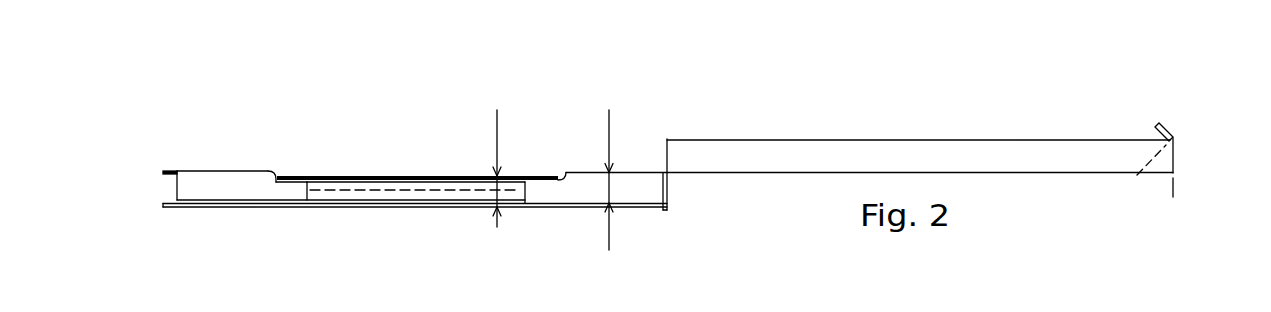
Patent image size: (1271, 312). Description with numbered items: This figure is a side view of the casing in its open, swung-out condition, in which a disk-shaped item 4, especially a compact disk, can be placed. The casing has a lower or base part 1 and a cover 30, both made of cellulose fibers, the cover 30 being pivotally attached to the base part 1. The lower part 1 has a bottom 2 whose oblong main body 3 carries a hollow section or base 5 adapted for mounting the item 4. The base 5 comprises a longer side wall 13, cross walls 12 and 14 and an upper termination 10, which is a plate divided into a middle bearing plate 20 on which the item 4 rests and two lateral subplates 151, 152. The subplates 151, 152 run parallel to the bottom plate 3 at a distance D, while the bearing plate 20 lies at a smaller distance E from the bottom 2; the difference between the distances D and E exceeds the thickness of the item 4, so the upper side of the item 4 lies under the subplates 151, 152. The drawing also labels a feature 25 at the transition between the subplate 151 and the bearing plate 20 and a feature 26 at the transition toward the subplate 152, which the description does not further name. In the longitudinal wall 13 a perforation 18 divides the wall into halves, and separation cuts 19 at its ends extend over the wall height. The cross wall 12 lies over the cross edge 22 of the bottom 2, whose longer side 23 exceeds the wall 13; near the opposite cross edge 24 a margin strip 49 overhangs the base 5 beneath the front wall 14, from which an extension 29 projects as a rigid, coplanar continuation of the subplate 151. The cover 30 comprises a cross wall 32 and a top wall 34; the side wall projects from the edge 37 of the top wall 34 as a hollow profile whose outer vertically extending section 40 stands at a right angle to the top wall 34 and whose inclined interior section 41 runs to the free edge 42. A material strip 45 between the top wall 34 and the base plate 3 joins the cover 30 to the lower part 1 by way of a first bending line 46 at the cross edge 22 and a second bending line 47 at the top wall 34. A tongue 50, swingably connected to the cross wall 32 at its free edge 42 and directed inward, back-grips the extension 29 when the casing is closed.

The lower or base part 1 is at (162, 136).
The bottom 2 is at (270, 207).
The main body of the bottom 3 is at (240, 207).
The disk-shaped item 4 is at (402, 176).
The section or base 5 is at (190, 170).
The upper termination or upper plate 10 is at (253, 170).
The cross wall of the base 12 is at (660, 184).
The longer side wall of the base 13 is at (590, 185).
The cross or front wall of the base 14 is at (176, 191).
The perforation line 18 is at (435, 192).
The separation cuts 19 is at (307, 182).
The bearing plate 20 is at (362, 187).
The cross edge of the bottom 22 is at (667, 210).
The longer side of the bottom 23 is at (480, 207).
The cross edge of the bottom 24 is at (163, 203).
The recess 25 is at (278, 177).
The transition 26 is at (563, 173).
The extension 29 is at (163, 173).
The cover 30 is at (875, 122).
The cross wall of the cover 32 is at (1175, 180).
The top wall of the cover 34 is at (1040, 175).
The edge of the top wall 37 is at (1148, 175).
The outer vertically extending section 40 is at (1175, 157).
The interior section 41 is at (1168, 142).
The free edge of the side wall 42 is at (1173, 138).
The material strip 45 is at (668, 196).
The first bending line 46 is at (668, 210).
The second bending line 47 is at (668, 174).
The margin strip 49 is at (172, 206).
The tongue 50 is at (1170, 137).
The subplate 151 is at (243, 170).
The subplate 152 is at (638, 171).
The distance E is at (498, 144).
The distance D is at (610, 156).